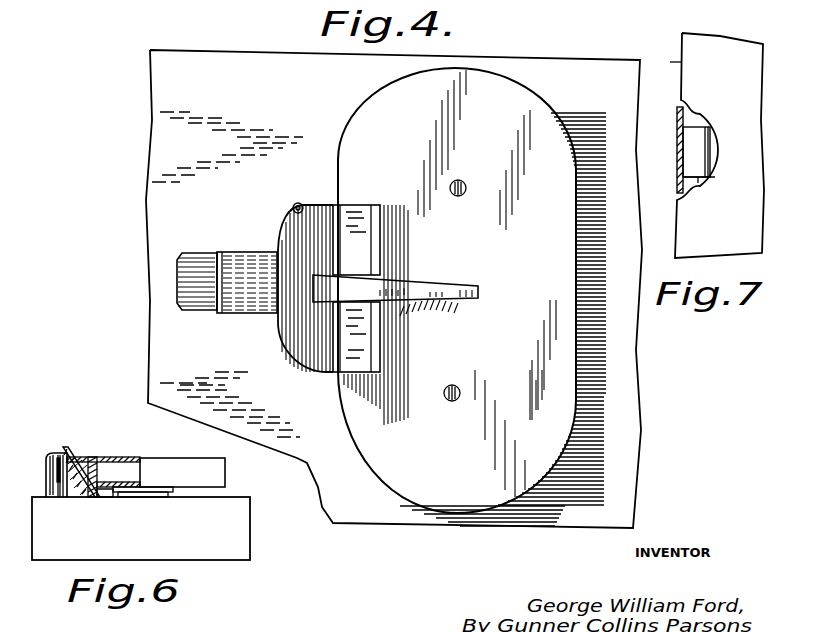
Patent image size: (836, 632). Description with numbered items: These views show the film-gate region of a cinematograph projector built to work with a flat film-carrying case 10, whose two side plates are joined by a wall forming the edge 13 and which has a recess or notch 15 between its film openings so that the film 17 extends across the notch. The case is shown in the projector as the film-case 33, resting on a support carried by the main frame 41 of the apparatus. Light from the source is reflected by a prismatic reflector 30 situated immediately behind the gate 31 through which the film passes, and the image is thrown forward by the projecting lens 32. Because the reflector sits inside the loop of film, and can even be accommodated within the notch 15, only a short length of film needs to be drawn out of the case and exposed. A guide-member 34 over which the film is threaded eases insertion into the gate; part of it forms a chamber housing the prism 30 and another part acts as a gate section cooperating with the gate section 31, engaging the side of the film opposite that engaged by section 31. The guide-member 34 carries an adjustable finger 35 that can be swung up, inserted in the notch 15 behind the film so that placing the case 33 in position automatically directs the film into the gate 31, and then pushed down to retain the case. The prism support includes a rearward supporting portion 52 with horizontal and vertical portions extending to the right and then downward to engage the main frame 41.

In FIG. 6, the film-carrying case 10 is at (183, 466).
In FIG. 7, the film-carrying case 10 is at (738, 47).
In FIG. 7, the wall forming the edge 13 is at (665, 61).
In FIG. 6, the recess or notch 15 is at (103, 468).
In FIG. 7, the recess or notch 15 is at (698, 183).
In FIG. 4, the film 17 is at (338, 203).
In FIG. 6, the prismatic reflector 30 is at (90, 458).
In FIG. 4, the gate 31 is at (285, 234).
In FIG. 6, the gate 31 is at (59, 455).
In FIG. 4, the projecting lens 32 is at (232, 267).
In FIG. 4, the film-case 33 is at (545, 137).
In FIG. 4, the guide-member 34 is at (308, 323).
In FIG. 6, the guide-member 34 is at (67, 449).
In FIG. 7, the guide-member 34 is at (687, 120).
In FIG. 4, the adjustable finger 35 is at (425, 288).
In FIG. 4, the main frame 41 is at (173, 97).
In FIG. 6, the rearward supporting portion 52 is at (93, 497).
In FIG. 7, the rearward supporting portion 52 is at (698, 137).